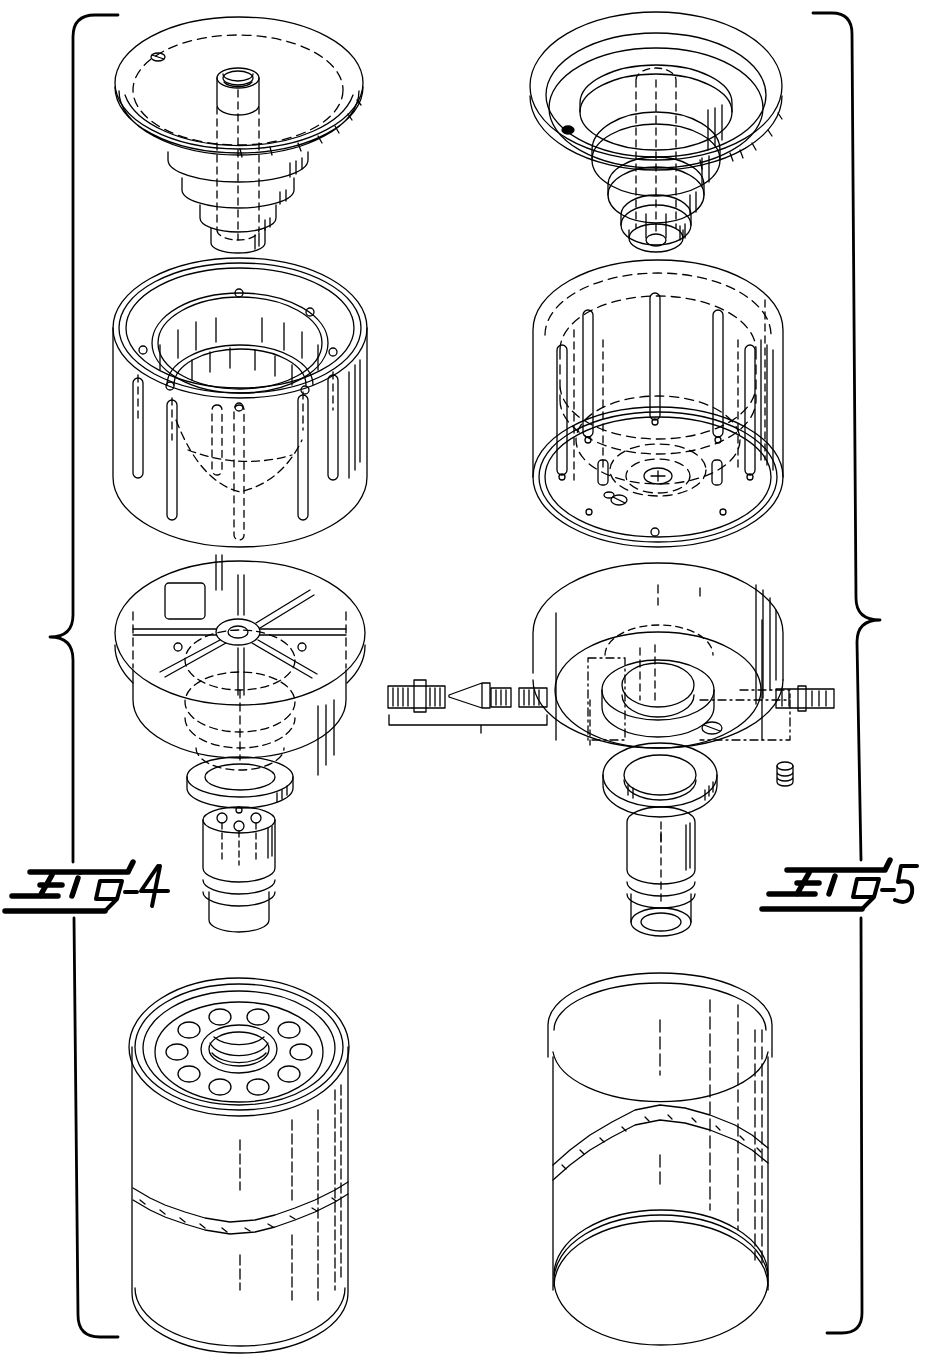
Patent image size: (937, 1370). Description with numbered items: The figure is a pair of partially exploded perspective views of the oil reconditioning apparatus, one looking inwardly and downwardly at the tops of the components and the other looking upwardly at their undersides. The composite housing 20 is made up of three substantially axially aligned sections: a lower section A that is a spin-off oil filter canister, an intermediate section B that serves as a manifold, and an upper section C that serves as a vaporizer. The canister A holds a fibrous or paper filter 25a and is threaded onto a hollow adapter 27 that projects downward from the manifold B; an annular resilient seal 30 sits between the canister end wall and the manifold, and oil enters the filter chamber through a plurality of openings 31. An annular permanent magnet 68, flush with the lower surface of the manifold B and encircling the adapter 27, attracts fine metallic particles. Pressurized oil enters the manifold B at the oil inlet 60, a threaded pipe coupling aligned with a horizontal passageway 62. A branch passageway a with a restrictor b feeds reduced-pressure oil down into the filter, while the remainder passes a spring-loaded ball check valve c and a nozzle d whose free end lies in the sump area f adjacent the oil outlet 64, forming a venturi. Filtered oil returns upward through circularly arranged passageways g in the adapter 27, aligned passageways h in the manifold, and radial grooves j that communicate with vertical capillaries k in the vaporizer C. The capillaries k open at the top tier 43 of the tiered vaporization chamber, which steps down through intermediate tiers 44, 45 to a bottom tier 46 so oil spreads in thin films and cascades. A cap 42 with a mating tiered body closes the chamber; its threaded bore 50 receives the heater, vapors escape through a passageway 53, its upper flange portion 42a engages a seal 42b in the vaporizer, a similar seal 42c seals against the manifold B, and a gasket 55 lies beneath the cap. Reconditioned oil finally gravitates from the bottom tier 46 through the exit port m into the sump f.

In FIG. 4, the composite housing 20 is at (46, 636).
In FIG. 5, the composite housing 20 is at (882, 619).
In FIG. 4, the cap 42 is at (235, 128).
In FIG. 5, the cap 42 is at (626, 128).
In FIG. 4, the upper flange portion 42a is at (150, 150).
In FIG. 5, the upper flange portion 42a is at (548, 110).
In FIG. 4, the annular resilient seal 42b is at (330, 300).
In FIG. 5, the seal 42c is at (560, 518).
In FIG. 4, the top tier 43 is at (252, 386).
In FIG. 5, the top tier 43 is at (646, 397).
In FIG. 4, the intermediate tier 44 is at (243, 348).
In FIG. 5, the intermediate tier 44 is at (745, 392).
In FIG. 4, the intermediate tier 45 is at (240, 390).
In FIG. 5, the intermediate tier 45 is at (745, 442).
In FIG. 5, the bottom tier 46 is at (668, 481).
In FIG. 4, the threaded bore 50 is at (258, 134).
In FIG. 5, the threaded bore 50 is at (641, 94).
In FIG. 4, the passageway 53 is at (150, 57).
In FIG. 5, the passageway 53 is at (562, 133).
In FIG. 5, the gasket 55 is at (660, 494).
In FIG. 5, the oil inlet 60 is at (830, 689).
In FIG. 5, the horizontal passageway 62 is at (750, 720).
In FIG. 5, the oil outlet 64 is at (402, 683).
In FIG. 4, the annular permanent magnet 68 is at (187, 790).
In FIG. 5, the annular permanent magnet 68 is at (605, 782).
In FIG. 4, the hollow adapter 27 is at (243, 869).
In FIG. 5, the hollow adapter 27 is at (627, 896).
In FIG. 4, the annular resilient seal 30 is at (290, 1018).
In FIG. 4, the openings 31 is at (292, 1074).
In FIG. 4, the filter 25a is at (222, 1224).
In FIG. 5, the filter 25a is at (641, 1108).
In FIG. 4, the lower section A is at (268, 1162).
In FIG. 5, the lower section A is at (620, 1159).
In FIG. 4, the intermediate section B is at (220, 655).
In FIG. 5, the intermediate section B is at (676, 673).
In FIG. 4, the upper section C is at (252, 386).
In FIG. 5, the upper section C is at (646, 397).
In FIG. 5, the branch passageway a is at (795, 772).
In FIG. 5, the restrictor b is at (712, 736).
In FIG. 5, the spring-loaded ball check valve c is at (512, 688).
In FIG. 5, the nozzle d is at (460, 688).
In FIG. 4, the sump area f is at (165, 596).
In FIG. 5, the sump area f is at (590, 760).
In FIG. 4, the passageways g is at (215, 820).
In FIG. 4, the passageways h is at (270, 620).
In FIG. 4, the radially extending grooves j is at (276, 575).
In FIG. 4, the capillaries k is at (240, 292).
In FIG. 5, the capillaries k is at (560, 404).
In FIG. 5, the exit port m is at (612, 500).